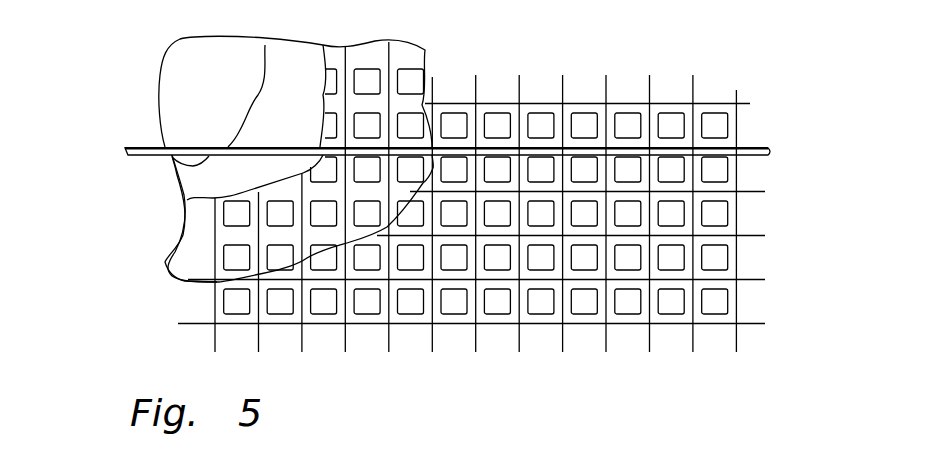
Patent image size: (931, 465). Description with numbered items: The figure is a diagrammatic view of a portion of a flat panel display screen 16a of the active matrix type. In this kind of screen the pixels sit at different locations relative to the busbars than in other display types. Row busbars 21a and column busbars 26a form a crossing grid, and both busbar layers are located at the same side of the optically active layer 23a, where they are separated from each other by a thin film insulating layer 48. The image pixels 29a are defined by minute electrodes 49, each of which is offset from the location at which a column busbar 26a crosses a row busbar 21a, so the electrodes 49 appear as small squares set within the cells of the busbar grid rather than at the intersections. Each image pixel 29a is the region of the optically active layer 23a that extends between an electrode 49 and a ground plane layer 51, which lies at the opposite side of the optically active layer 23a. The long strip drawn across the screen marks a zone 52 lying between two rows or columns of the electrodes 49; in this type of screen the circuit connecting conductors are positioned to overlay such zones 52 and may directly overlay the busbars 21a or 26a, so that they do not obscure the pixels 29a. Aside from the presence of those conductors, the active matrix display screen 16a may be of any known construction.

The flat panel display screen 16a is at (120, 58).
The ground plane layer 51 is at (226, 94).
The optically active layer 23a is at (306, 114).
The thin film insulating layer 48 is at (168, 262).
The zone 52 is at (712, 148).
The electrode 49 is at (282, 316).
The column busbar 26a is at (388, 340).
The row busbar 21a is at (453, 316).
The image pixel 29a is at (630, 330).